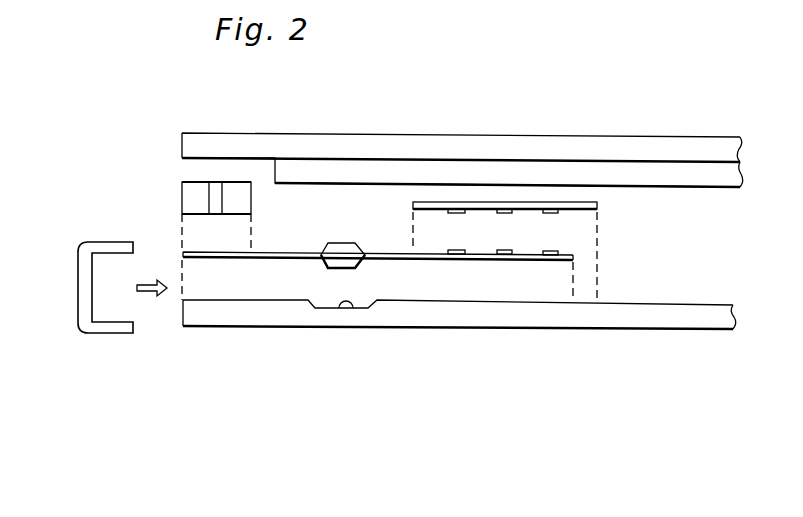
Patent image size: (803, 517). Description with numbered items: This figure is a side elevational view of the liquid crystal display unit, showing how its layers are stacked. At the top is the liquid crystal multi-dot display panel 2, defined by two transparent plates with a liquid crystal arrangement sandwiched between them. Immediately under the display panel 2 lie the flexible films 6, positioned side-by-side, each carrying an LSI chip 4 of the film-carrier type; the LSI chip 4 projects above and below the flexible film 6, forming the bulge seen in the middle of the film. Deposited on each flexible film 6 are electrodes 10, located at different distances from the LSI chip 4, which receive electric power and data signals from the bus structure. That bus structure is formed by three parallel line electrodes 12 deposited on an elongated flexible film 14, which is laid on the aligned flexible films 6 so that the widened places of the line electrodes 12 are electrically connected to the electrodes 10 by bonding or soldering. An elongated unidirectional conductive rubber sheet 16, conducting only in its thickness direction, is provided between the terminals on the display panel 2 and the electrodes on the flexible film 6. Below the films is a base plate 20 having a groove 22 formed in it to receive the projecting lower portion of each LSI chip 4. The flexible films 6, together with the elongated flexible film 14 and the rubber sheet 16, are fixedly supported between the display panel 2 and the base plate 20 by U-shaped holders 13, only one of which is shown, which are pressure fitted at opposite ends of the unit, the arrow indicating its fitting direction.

The liquid crystal multi-dot display panel 2 is at (416, 133).
The LSI chip 4 is at (355, 243).
The flexible film 6 is at (278, 258).
The electrodes 10 is at (457, 250).
The line electrodes 12 is at (508, 213).
The U-shaped holder 13 is at (78, 293).
The elongated flexible film 14 is at (523, 202).
The unidirectional conductive rubber sheet 16 is at (182, 200).
The base plate 20 is at (278, 328).
The groove 22 is at (346, 309).